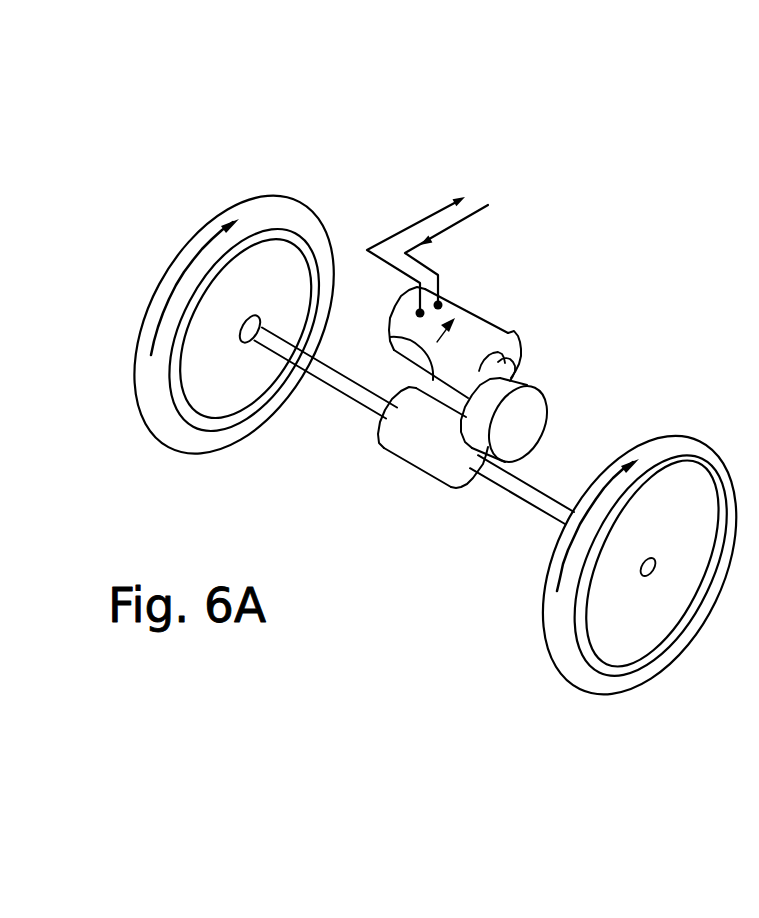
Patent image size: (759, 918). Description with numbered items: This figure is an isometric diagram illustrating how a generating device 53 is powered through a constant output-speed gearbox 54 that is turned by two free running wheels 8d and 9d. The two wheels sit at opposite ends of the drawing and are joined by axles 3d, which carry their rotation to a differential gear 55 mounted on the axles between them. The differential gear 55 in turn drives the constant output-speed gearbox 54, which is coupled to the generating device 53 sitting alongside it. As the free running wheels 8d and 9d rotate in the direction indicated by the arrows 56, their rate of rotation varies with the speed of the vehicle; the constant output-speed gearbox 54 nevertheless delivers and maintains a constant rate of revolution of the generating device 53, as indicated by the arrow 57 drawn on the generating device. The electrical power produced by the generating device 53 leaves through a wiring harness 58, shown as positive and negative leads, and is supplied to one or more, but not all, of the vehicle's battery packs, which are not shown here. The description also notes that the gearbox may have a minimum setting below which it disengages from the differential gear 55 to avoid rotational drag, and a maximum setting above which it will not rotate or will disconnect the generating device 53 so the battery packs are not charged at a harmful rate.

The free running wheel 8d is at (255, 213).
The free running wheel 9d is at (652, 453).
The axle 3d is at (325, 373).
The generating device 53 is at (470, 328).
The constant output-speed gearbox 54 is at (518, 425).
The differential gear 55 is at (407, 448).
The arrows 56 is at (180, 277).
The arrow 57 is at (390, 337).
The wiring harness 58 is at (442, 231).